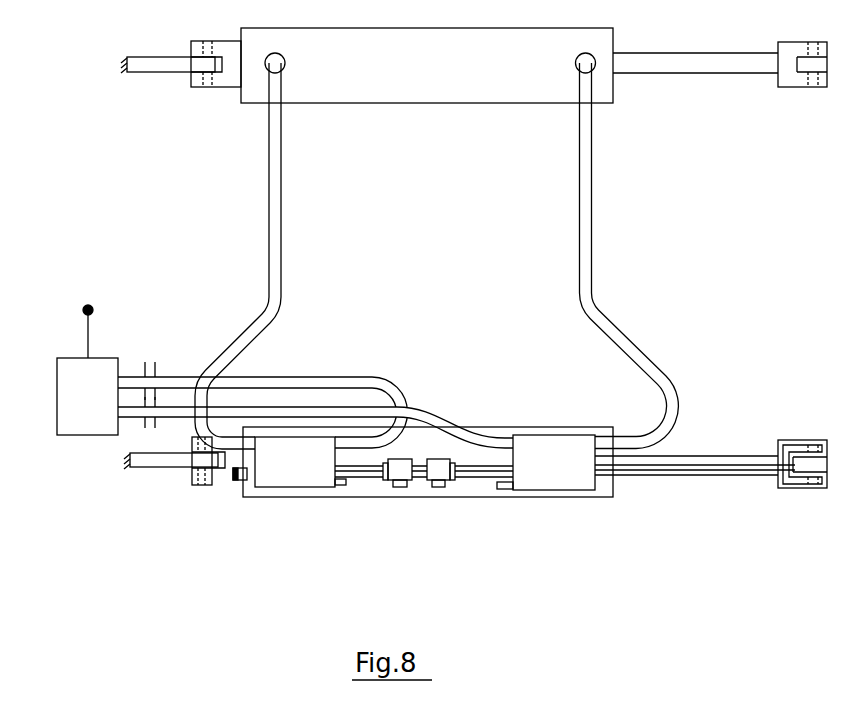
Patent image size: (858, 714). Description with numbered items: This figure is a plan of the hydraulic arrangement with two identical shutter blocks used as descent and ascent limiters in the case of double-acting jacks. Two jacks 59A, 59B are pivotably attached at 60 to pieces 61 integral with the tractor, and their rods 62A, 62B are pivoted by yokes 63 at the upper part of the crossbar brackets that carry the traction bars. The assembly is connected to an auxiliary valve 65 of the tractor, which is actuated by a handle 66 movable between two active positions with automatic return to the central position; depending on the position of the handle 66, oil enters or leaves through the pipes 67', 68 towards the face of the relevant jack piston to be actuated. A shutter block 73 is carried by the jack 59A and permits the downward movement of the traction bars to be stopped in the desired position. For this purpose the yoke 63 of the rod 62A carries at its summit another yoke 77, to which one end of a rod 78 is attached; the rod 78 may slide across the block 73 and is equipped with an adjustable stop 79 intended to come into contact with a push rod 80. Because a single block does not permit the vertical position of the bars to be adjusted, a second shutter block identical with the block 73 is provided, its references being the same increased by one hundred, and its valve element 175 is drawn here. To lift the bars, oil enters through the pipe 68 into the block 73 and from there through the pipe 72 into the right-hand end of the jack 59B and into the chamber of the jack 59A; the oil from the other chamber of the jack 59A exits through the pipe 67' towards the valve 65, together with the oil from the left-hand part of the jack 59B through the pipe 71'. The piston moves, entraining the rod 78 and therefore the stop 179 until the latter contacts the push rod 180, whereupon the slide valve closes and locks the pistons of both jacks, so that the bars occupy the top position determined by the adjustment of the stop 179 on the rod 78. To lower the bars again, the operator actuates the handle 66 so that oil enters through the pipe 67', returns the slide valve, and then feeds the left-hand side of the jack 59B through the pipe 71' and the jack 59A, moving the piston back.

The jack 59A is at (272, 502).
The jack 59B is at (428, 92).
The pivot attachment 60 is at (226, 83).
The piece integral with the tractor 61 is at (153, 67).
The rod 62A is at (713, 455).
The rod 62B is at (708, 62).
The yoke 63 is at (797, 82).
The auxiliary valve 65 is at (83, 427).
The handle 66 is at (90, 338).
The pipe 67' is at (263, 395).
The pipe 68 is at (157, 427).
The pipe 71' is at (236, 251).
The pipe 72 is at (592, 232).
The shutter block 73 is at (546, 484).
The yoke 77 is at (786, 442).
The rod 78 is at (237, 485).
The adjustable stop 79 is at (433, 482).
The push rod 80 is at (497, 493).
The valve block 175 is at (303, 470).
The stop 179 is at (410, 468).
The push rod 180 is at (350, 490).